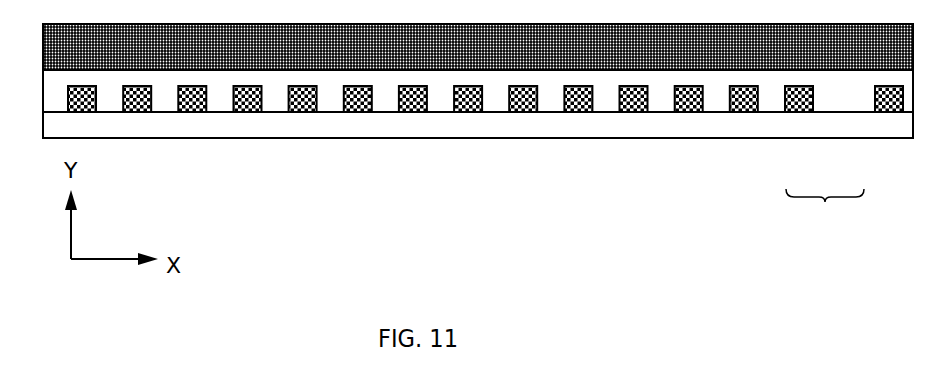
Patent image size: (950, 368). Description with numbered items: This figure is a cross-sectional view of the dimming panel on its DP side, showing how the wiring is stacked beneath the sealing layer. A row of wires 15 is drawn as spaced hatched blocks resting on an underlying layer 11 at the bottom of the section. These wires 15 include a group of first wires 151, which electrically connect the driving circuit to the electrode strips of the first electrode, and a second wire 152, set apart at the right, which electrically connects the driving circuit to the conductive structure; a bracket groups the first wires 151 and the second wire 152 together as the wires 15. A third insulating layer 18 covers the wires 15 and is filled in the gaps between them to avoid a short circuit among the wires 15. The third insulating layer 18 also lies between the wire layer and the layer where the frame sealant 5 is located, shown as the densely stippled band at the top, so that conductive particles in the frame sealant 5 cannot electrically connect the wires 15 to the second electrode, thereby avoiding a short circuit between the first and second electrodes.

The frame sealant 5 is at (63, 43).
The substrate 11 is at (60, 127).
The third insulating layer 18 is at (56, 93).
The wires 15 is at (825, 207).
The first wires 151 is at (793, 97).
The second wire 152 is at (882, 112).